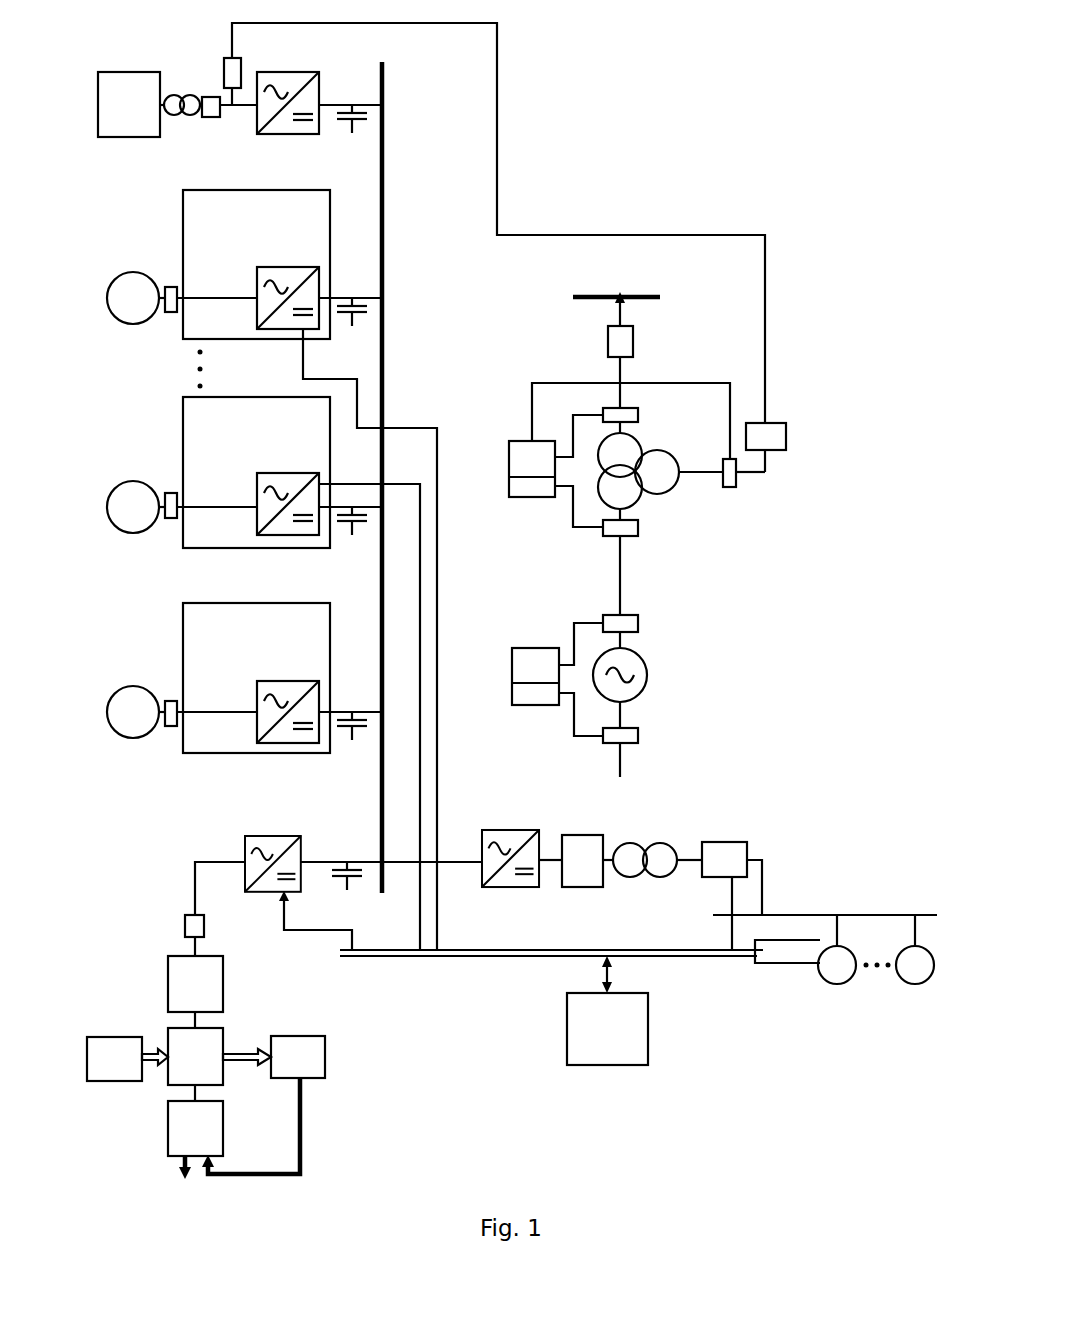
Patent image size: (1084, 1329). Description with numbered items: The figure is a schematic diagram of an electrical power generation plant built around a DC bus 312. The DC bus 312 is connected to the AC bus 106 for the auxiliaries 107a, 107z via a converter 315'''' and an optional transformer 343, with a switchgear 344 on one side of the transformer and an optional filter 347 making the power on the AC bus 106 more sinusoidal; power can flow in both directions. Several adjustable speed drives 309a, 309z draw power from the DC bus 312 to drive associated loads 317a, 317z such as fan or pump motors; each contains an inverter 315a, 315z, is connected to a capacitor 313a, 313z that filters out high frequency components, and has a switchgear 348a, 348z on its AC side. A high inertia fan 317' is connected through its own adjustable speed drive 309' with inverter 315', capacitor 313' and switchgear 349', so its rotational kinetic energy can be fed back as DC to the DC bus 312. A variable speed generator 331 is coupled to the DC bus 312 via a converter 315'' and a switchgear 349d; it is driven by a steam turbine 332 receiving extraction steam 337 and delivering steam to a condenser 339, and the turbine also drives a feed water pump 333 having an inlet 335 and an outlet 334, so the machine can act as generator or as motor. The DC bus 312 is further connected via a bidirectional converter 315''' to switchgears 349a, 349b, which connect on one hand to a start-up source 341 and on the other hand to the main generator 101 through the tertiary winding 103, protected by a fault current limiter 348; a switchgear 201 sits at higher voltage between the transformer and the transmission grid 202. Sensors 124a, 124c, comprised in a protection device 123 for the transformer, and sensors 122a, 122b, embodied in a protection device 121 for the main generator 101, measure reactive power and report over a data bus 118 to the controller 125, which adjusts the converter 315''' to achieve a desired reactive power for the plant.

The main generator 101 is at (647, 668).
The tertiary winding 103 is at (592, 470).
The AC bus 106 is at (818, 915).
The auxiliary 107a is at (840, 984).
The auxiliary 107z is at (918, 984).
The data bus 118 is at (705, 957).
The device for protection of the main generator 121 is at (557, 679).
The sensor 122a is at (638, 527).
The sensor 122b is at (639, 735).
The device for protection of the main transformer 123 is at (556, 471).
The sensor 124a is at (638, 412).
The sensor 124c is at (738, 480).
The controller 125 is at (628, 1044).
The switchgear 201 is at (633, 340).
The transmission grid 202 is at (612, 297).
The adjustable speed drive 309a is at (240, 214).
The adjustable speed drive 309z is at (240, 424).
The adjustable speed drive 309' is at (256, 678).
The DC bus 312 is at (385, 278).
The capacitor 313a is at (362, 302).
The capacitor 313z is at (362, 516).
The capacitor 313' is at (350, 764).
The inverter 315a is at (278, 267).
The inverter 315z is at (278, 473).
The inverter 315' is at (288, 678).
The converter 315'' is at (288, 838).
The converter 315''' is at (316, 81).
The converter 315'''' is at (525, 832).
The load 317a is at (134, 273).
The load 317z is at (134, 482).
The high inertia fan 317' is at (122, 685).
The variable speed generator 331 is at (217, 996).
The steam turbine 332 is at (217, 1068).
The feed water pump 333 is at (217, 1140).
The outlet 334 is at (173, 1160).
The inlet 335 is at (212, 1160).
The extraction steam 337 is at (136, 1070).
The condenser 339 is at (320, 1068).
The start-up source 341 is at (124, 72).
The transformer 343 is at (672, 848).
The switchgear 344 is at (590, 835).
The filter 347 is at (740, 832).
The fault current limiter 348 is at (772, 421).
The switchgear 348a is at (168, 287).
The switchgear 348z is at (168, 493).
The switchgear 349a is at (212, 117).
The switchgear 349b is at (224, 72).
The switchgear 349d is at (185, 930).
The switchgear 349' is at (153, 665).